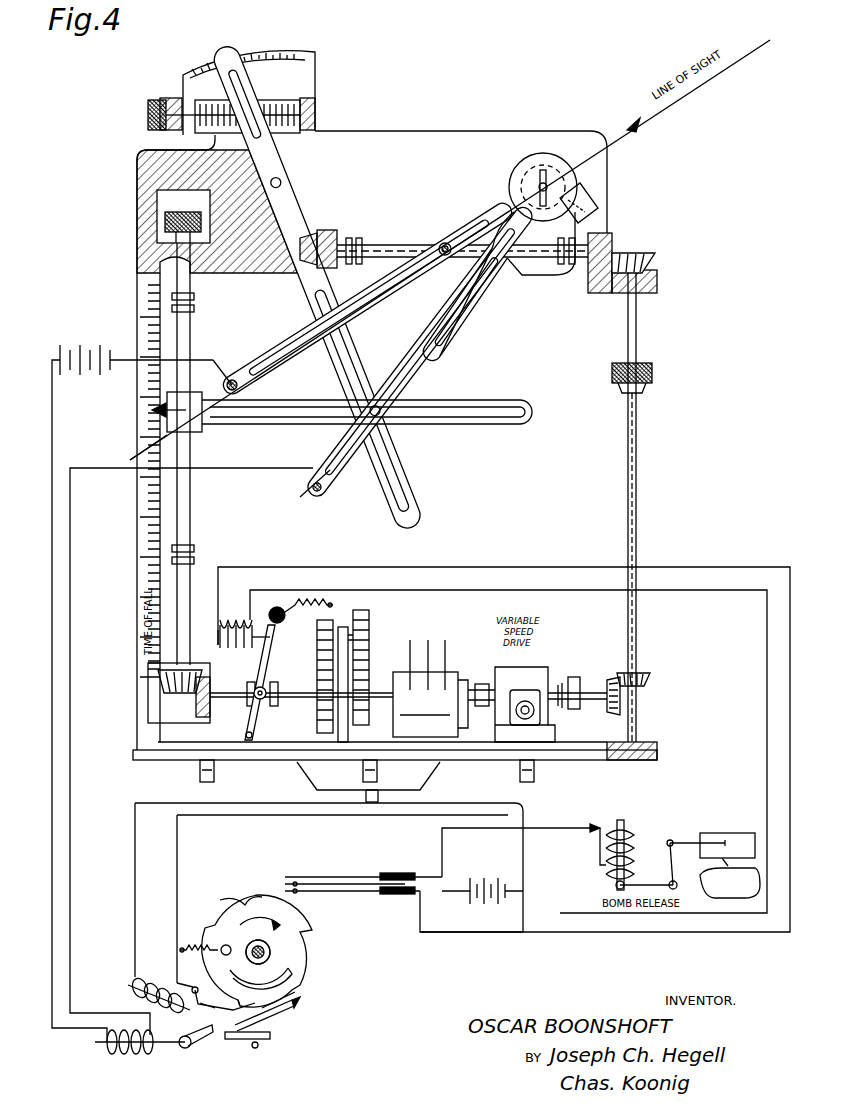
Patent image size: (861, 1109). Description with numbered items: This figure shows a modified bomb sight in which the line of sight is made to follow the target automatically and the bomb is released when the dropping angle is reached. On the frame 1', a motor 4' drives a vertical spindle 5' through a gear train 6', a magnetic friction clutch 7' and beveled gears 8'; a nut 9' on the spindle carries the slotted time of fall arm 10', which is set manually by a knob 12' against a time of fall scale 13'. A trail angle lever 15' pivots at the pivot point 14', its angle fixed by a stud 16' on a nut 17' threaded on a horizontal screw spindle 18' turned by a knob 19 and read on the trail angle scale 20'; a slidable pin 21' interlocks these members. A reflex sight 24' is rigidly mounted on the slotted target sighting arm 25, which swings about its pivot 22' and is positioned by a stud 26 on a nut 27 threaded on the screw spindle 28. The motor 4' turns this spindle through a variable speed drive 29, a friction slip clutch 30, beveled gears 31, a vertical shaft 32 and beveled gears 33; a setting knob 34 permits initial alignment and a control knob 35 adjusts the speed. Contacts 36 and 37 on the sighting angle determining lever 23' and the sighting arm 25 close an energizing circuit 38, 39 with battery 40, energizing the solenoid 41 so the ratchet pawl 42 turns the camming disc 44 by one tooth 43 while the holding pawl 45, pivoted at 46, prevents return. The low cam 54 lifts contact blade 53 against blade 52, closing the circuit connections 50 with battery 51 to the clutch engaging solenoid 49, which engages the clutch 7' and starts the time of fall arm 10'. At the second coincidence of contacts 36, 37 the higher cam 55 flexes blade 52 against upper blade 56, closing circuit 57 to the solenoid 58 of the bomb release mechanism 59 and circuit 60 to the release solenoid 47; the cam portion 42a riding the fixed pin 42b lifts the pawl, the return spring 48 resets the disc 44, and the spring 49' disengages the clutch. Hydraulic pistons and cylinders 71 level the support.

The frame 1' is at (157, 700).
The motor 4' is at (444, 688).
The spindle 5' is at (194, 454).
The gear train 6' is at (362, 672).
The magnetic friction clutch 7' is at (247, 682).
The beveled gears 8' is at (184, 693).
The nut 9' is at (189, 421).
The time of fall arm 10' is at (367, 399).
The knob 12' is at (183, 216).
The time of fall scale 13' is at (135, 427).
The pivot point 14' is at (295, 170).
The trail angle lever 15' is at (317, 287).
The stud 16' is at (277, 106).
The nut 17' is at (256, 84).
The horizontal screw spindle 18' is at (220, 108).
The knob 19 is at (147, 116).
The trail angle scale 20' is at (252, 83).
The pin 21' is at (420, 351).
The pivot 22' is at (535, 206).
The initial sighting angle and dropping angle determining lever 23' is at (465, 304).
The sight 24' is at (611, 199).
The target sighting arm 25 is at (292, 345).
The stud 26 is at (445, 258).
The nut 27 is at (450, 244).
The screw spindle 28 is at (353, 245).
The variable speed drive 29 is at (525, 704).
The friction slip clutch 30 is at (582, 677).
The beveled gears 31 is at (608, 678).
The vertical shaft 32 is at (637, 652).
The beveled gears 33 is at (638, 254).
The setting knob 34 is at (653, 372).
The control knob 35 is at (533, 713).
The contact 36 is at (315, 478).
The contact 37 is at (240, 388).
The energizing circuit 38 is at (52, 830).
The energizing circuit 39 is at (70, 828).
The battery 40 is at (105, 346).
The solenoid 41 is at (118, 1055).
The ratchet pawl 42 is at (290, 1012).
The cam portion 42a is at (271, 1037).
The fixed pin 42b is at (195, 1050).
The teeth 43 is at (305, 985).
The camming disc 44 is at (312, 940).
The holding pawl 45 is at (205, 1014).
The pivot 46 is at (216, 987).
The release solenoid 47 is at (127, 985).
The return spring 48 is at (208, 947).
The clutch engaging solenoid 49 is at (244, 624).
The spring 49' is at (301, 625).
The electrical circuit connections 50 is at (518, 922).
The battery 51 is at (486, 878).
The contact blade 52 is at (290, 882).
The contact blade 53 is at (283, 890).
The low cam 54 is at (300, 912).
The higher circuit closing cam 55 is at (232, 898).
The upper contact blade 56 is at (309, 877).
The electrical circuit 57 is at (443, 855).
The solenoid 58 is at (632, 832).
The bomb release mechanism 59 is at (720, 833).
The circuit 60 is at (177, 835).
The hydraulic pistons and cylinders 71 is at (214, 778).